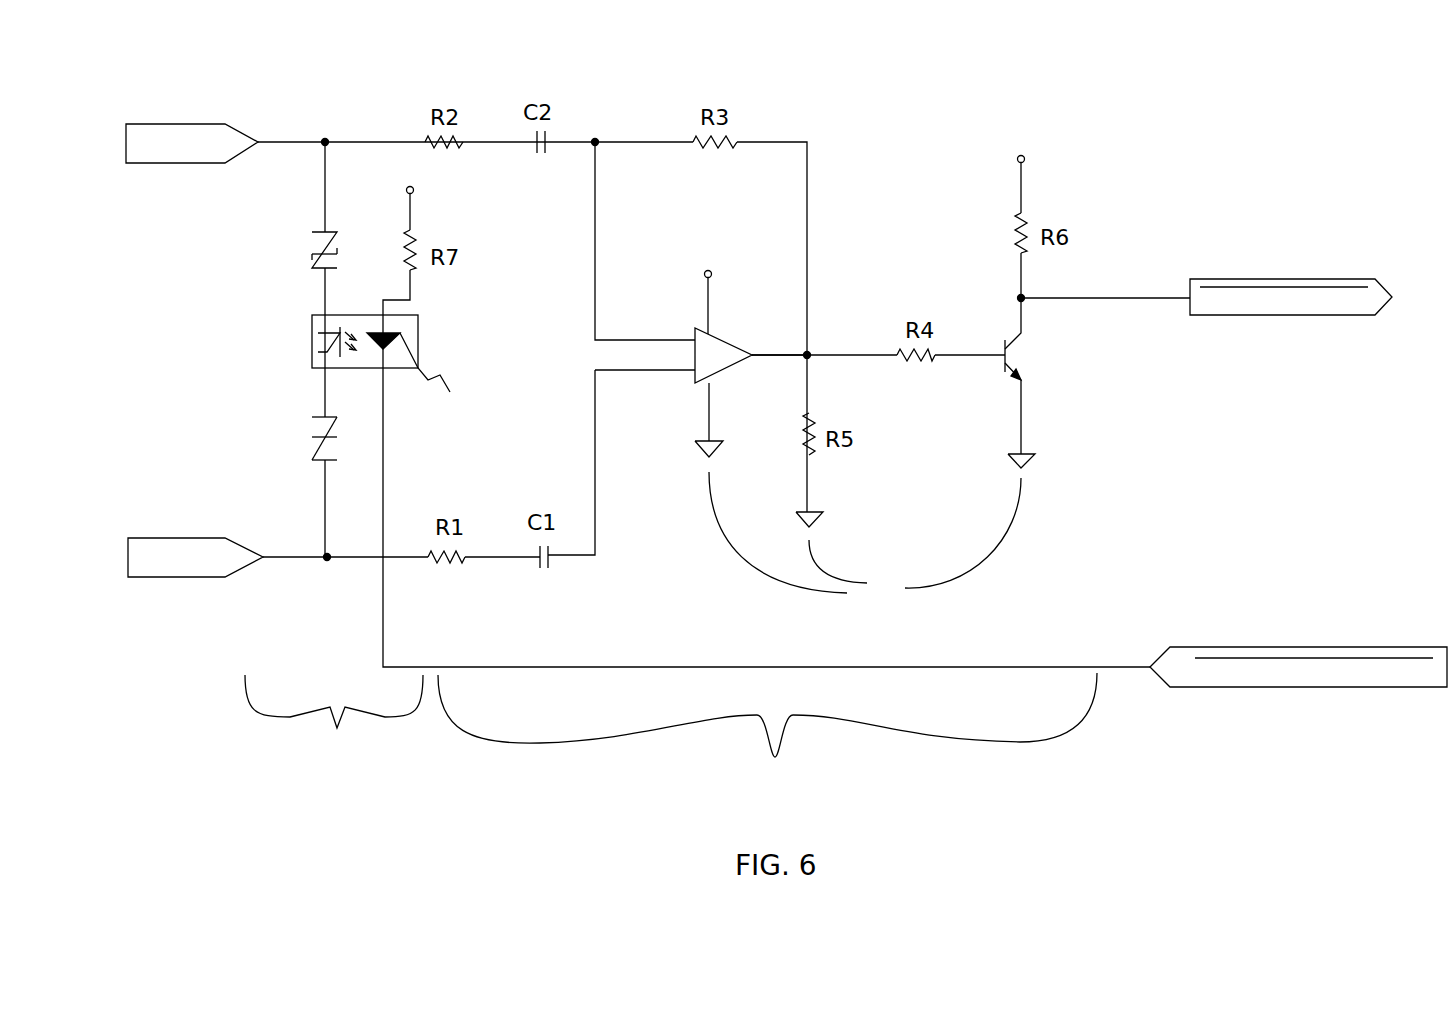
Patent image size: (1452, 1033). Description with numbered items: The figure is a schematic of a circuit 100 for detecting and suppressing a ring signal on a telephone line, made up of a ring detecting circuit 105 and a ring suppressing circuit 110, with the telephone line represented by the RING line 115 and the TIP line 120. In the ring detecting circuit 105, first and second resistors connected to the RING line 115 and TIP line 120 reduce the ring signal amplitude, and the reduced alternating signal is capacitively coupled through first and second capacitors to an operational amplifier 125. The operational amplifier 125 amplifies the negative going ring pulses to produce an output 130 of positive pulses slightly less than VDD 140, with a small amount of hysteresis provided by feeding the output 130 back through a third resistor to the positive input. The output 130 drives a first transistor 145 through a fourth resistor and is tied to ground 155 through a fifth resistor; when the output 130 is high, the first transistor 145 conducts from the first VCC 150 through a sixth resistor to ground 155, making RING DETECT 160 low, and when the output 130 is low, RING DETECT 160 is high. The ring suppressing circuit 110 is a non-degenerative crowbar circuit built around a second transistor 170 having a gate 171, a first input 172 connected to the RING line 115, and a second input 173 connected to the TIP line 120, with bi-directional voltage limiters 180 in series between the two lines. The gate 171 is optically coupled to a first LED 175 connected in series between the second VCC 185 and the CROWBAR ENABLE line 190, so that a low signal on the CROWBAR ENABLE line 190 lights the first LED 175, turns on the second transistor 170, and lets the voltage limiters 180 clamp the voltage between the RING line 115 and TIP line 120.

The circuit 100 is at (166, 356).
The ring detecting circuit 105 is at (767, 737).
The ring suppressing circuit 110 is at (334, 724).
The RING line 115 is at (199, 591).
The TIP line 120 is at (198, 117).
The operational amplifier 125 is at (687, 326).
The output 130 is at (779, 332).
The VDD 140 is at (691, 268).
The first transistor 145 is at (1058, 383).
The first VCC 150 is at (1064, 209).
The ground 155 is at (865, 541).
The RING DETECT 160 is at (1291, 272).
The second transistor 170 is at (353, 342).
The gate 171 is at (291, 344).
The first input 172 is at (352, 387).
The second input 173 is at (365, 312).
The first LED 175 is at (432, 367).
The bi-directional voltage limiters 180 is at (286, 359).
The second VCC 185 is at (467, 211).
The CROWBAR ENABLE line 190 is at (1301, 642).